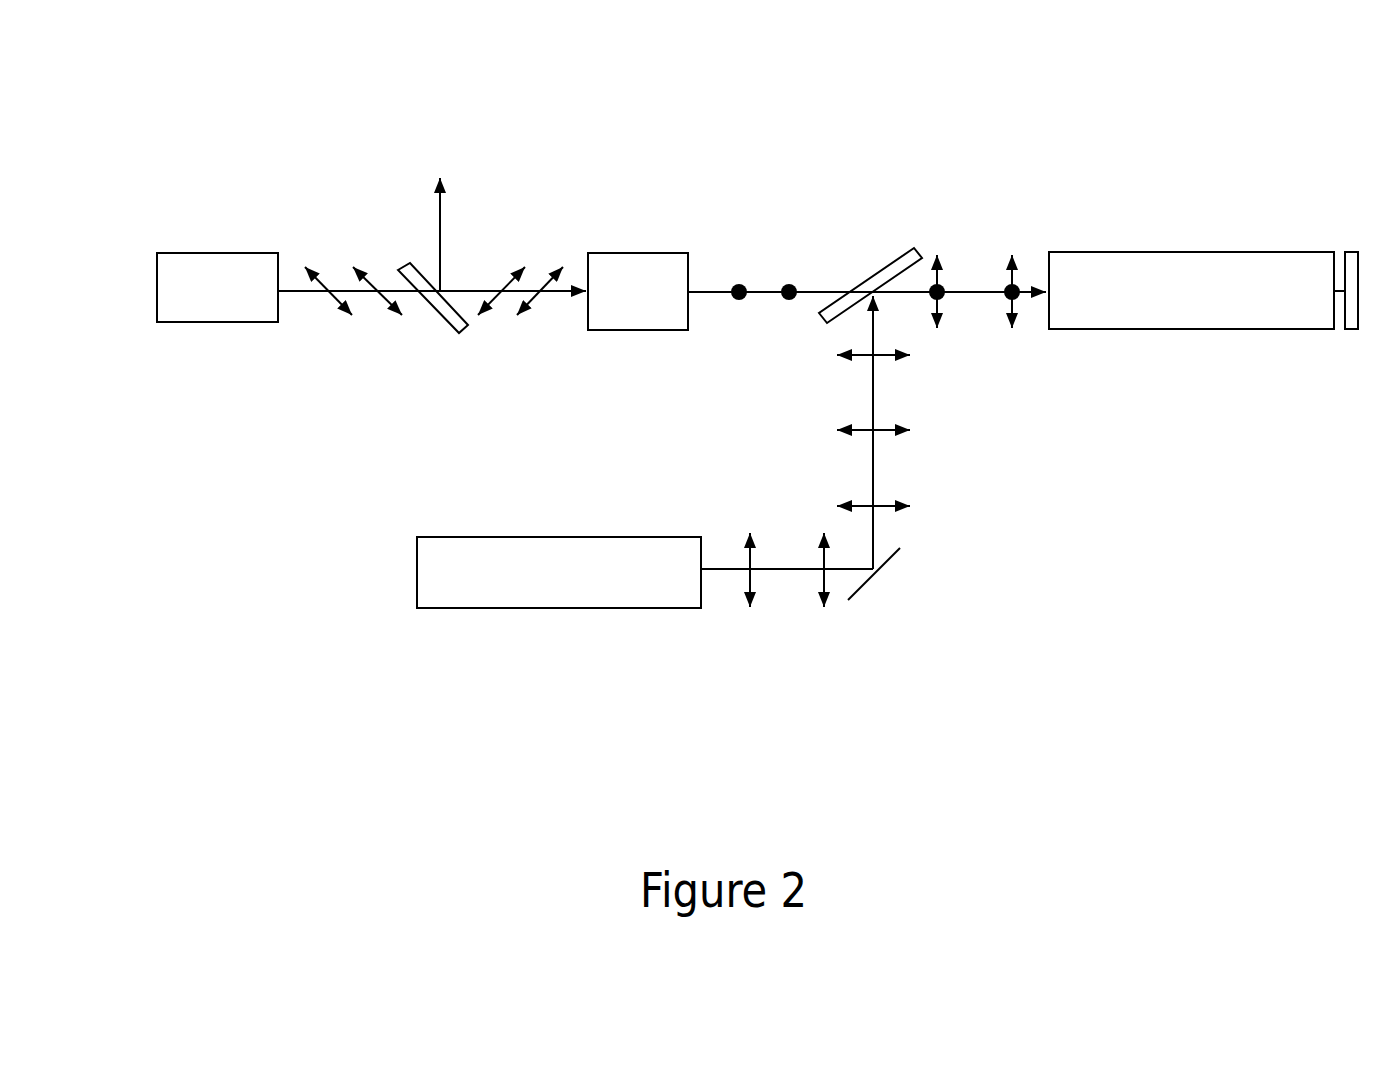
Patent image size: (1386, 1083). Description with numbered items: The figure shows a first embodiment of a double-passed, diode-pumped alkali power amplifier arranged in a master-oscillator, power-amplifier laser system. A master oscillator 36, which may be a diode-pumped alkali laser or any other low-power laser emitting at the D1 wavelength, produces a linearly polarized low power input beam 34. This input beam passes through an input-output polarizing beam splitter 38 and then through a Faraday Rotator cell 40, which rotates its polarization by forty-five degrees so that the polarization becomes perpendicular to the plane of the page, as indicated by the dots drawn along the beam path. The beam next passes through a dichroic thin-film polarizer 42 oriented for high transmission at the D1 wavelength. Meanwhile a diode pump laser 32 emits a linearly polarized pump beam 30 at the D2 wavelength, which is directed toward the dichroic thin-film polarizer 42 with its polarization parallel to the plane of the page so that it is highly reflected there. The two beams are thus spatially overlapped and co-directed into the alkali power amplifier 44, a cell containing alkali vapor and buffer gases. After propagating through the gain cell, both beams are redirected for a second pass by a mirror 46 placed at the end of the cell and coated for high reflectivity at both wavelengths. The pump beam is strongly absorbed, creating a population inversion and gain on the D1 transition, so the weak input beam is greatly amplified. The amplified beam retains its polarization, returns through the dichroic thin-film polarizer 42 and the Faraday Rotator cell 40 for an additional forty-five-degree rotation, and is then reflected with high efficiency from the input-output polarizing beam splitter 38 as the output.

The pump beam 30 is at (788, 569).
The diode pump laser 32 is at (552, 608).
The low power input beam 34 is at (299, 291).
The master oscillator 36 is at (208, 322).
The input-output polarizing beam splitter 38 is at (415, 262).
The Faraday Rotator cell 40 is at (638, 253).
The dichroic thin-film polarizer 42 is at (887, 270).
The alkali power amplifier 44 is at (1185, 252).
The mirror 46 is at (1357, 329).